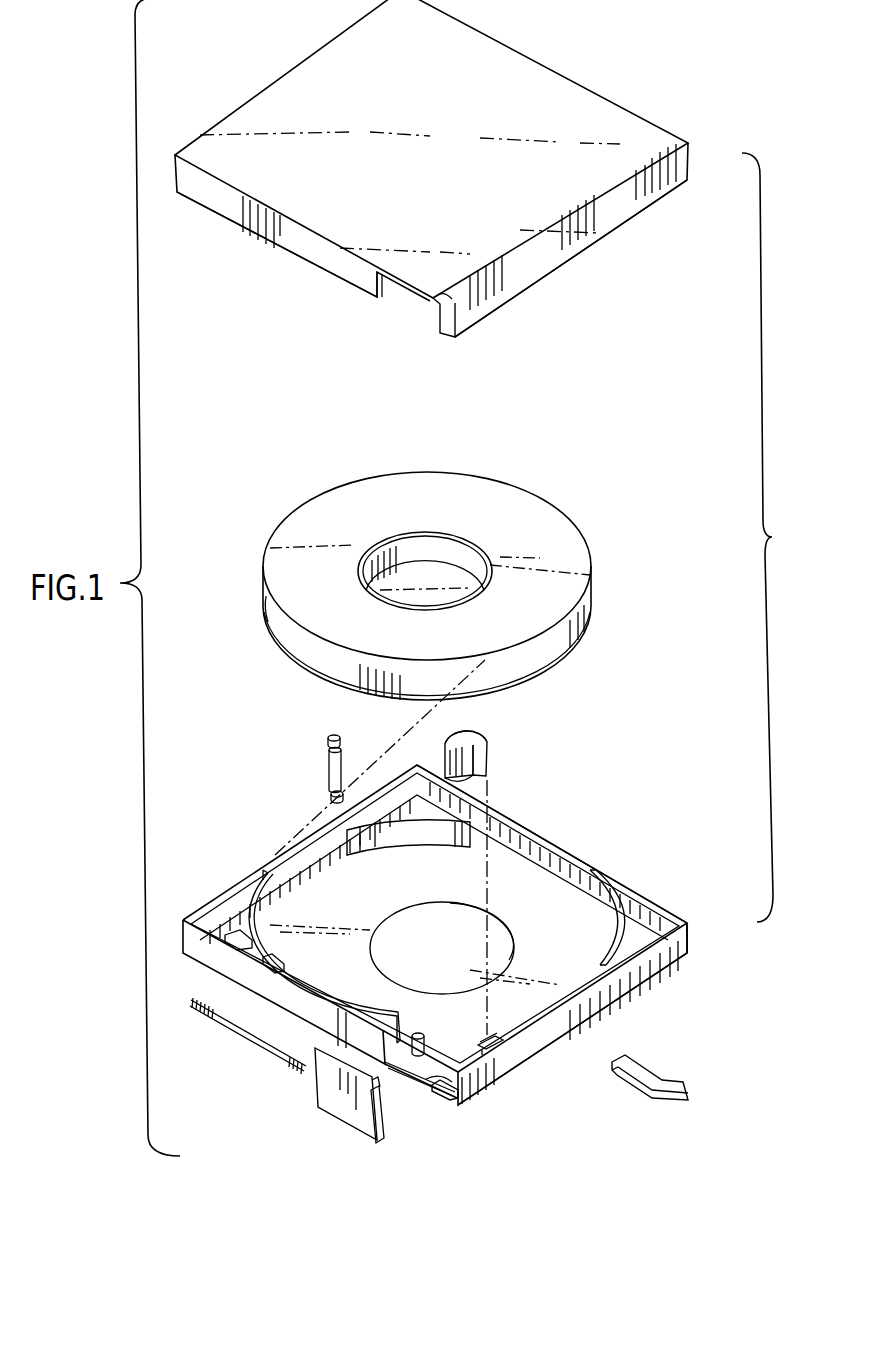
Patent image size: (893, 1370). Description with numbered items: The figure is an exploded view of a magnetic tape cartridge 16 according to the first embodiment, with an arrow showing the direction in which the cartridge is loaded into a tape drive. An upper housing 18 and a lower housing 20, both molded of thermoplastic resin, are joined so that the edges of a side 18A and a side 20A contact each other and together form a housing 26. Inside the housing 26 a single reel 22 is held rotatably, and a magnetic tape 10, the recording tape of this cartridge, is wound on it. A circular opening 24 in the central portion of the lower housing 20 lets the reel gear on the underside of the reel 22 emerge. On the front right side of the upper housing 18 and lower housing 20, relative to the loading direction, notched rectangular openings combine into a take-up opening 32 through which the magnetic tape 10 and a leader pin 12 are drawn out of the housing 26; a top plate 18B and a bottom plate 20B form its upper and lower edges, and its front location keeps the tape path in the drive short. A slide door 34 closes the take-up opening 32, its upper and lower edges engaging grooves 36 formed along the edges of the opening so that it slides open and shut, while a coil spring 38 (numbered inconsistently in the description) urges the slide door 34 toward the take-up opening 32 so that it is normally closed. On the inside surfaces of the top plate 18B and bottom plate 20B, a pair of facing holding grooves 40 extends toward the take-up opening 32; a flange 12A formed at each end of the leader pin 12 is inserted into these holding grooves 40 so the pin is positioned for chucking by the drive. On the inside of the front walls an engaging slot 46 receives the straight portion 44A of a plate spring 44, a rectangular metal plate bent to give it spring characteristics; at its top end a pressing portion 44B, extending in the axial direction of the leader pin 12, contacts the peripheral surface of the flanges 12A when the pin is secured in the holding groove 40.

The magnetic tape 10 is at (366, 760).
The leader pin 12 is at (328, 775).
The flange 12A is at (328, 742).
The magnetic tape cartridge 16 is at (770, 537).
The upper housing 18 is at (553, 118).
The side 18A is at (333, 257).
The top plate 18B is at (532, 225).
The lower housing 20 is at (600, 868).
The side 20A is at (688, 953).
The bottom plate 20B is at (513, 885).
The single reel 22 is at (562, 497).
The circular opening 24 is at (447, 912).
The housing 26 is at (645, 893).
The take-up opening 32 is at (418, 1066).
The slide door 34 is at (337, 1100).
The grooves 36 is at (392, 1078).
The spring 38 is at (202, 1018).
The holding groove 40 is at (437, 303).
The plate spring 44 is at (482, 758).
The straight portion 44A is at (473, 734).
The pressing portion 44B is at (450, 732).
The engaging slot 46 is at (497, 1043).